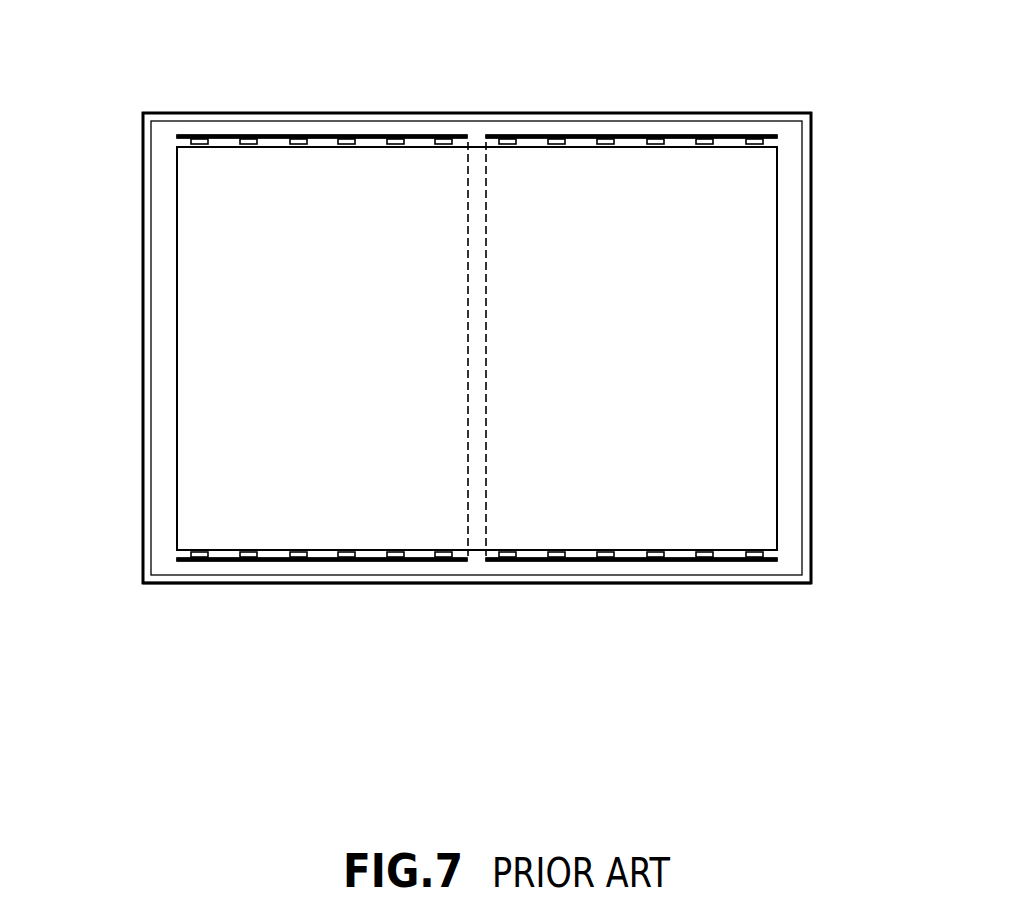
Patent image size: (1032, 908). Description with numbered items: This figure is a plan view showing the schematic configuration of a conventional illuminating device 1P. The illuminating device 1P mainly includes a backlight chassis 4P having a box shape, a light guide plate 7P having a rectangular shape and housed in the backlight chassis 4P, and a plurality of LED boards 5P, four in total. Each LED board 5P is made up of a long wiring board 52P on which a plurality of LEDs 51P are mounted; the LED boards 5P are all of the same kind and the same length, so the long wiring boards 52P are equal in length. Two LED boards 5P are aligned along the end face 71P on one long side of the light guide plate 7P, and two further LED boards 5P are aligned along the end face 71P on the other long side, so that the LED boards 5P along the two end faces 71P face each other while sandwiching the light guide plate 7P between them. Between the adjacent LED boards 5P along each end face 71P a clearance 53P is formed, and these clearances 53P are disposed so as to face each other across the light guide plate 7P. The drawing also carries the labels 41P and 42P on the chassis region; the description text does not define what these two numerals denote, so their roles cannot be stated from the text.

The illuminating device 1P is at (816, 672).
The backlight chassis 4P is at (812, 325).
The inner frame portion 41P is at (788, 270).
The outer frame portion 42P is at (740, 580).
The LED board 5P is at (314, 134).
The LED 51P is at (199, 139).
The long wiring board 52P is at (177, 136).
The clearance 53P is at (477, 134).
The light guide plate 7P is at (748, 430).
The end face 71P is at (213, 147).